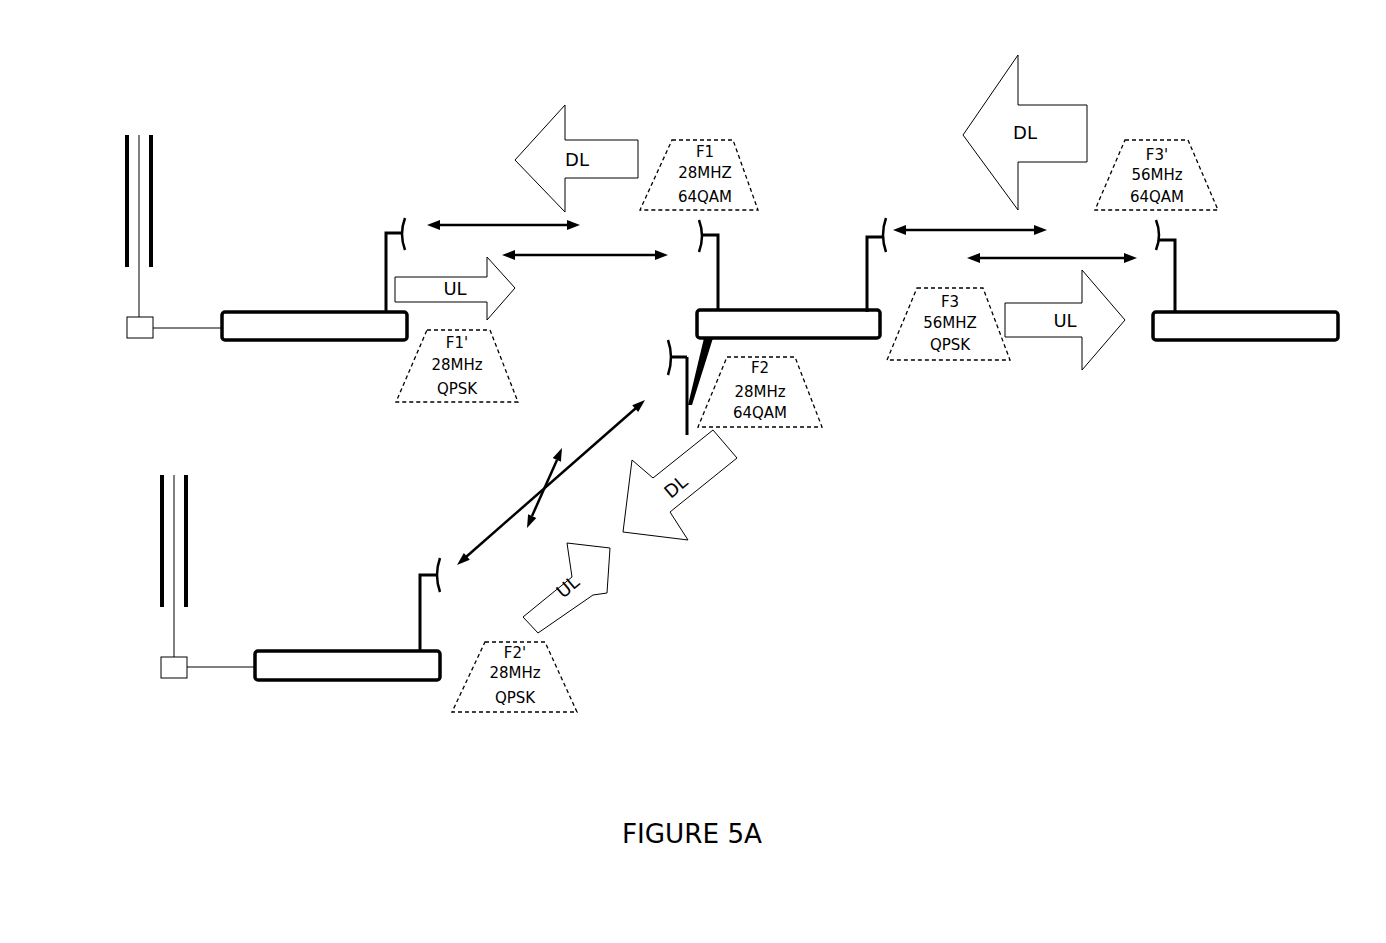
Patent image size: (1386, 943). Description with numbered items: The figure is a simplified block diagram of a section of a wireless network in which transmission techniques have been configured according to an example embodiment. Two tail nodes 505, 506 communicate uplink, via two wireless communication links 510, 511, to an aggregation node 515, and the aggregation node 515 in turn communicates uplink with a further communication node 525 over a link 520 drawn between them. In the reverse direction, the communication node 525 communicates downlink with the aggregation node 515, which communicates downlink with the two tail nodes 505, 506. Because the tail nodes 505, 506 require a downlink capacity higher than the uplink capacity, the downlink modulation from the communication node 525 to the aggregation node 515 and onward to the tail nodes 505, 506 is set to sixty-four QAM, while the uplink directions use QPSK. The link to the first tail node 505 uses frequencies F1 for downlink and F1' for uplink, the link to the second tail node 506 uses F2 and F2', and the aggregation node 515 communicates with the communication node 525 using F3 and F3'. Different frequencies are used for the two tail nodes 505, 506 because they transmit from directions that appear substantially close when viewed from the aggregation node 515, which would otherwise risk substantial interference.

The first tail node 505 is at (314, 279).
The second tail node 506 is at (347, 619).
The aggregation node 515 is at (777, 326).
The communication node 525 is at (1245, 280).
The first wireless communication link 510 is at (506, 255).
The second wireless communication link 511 is at (551, 482).
The third wireless link 520 is at (971, 258).